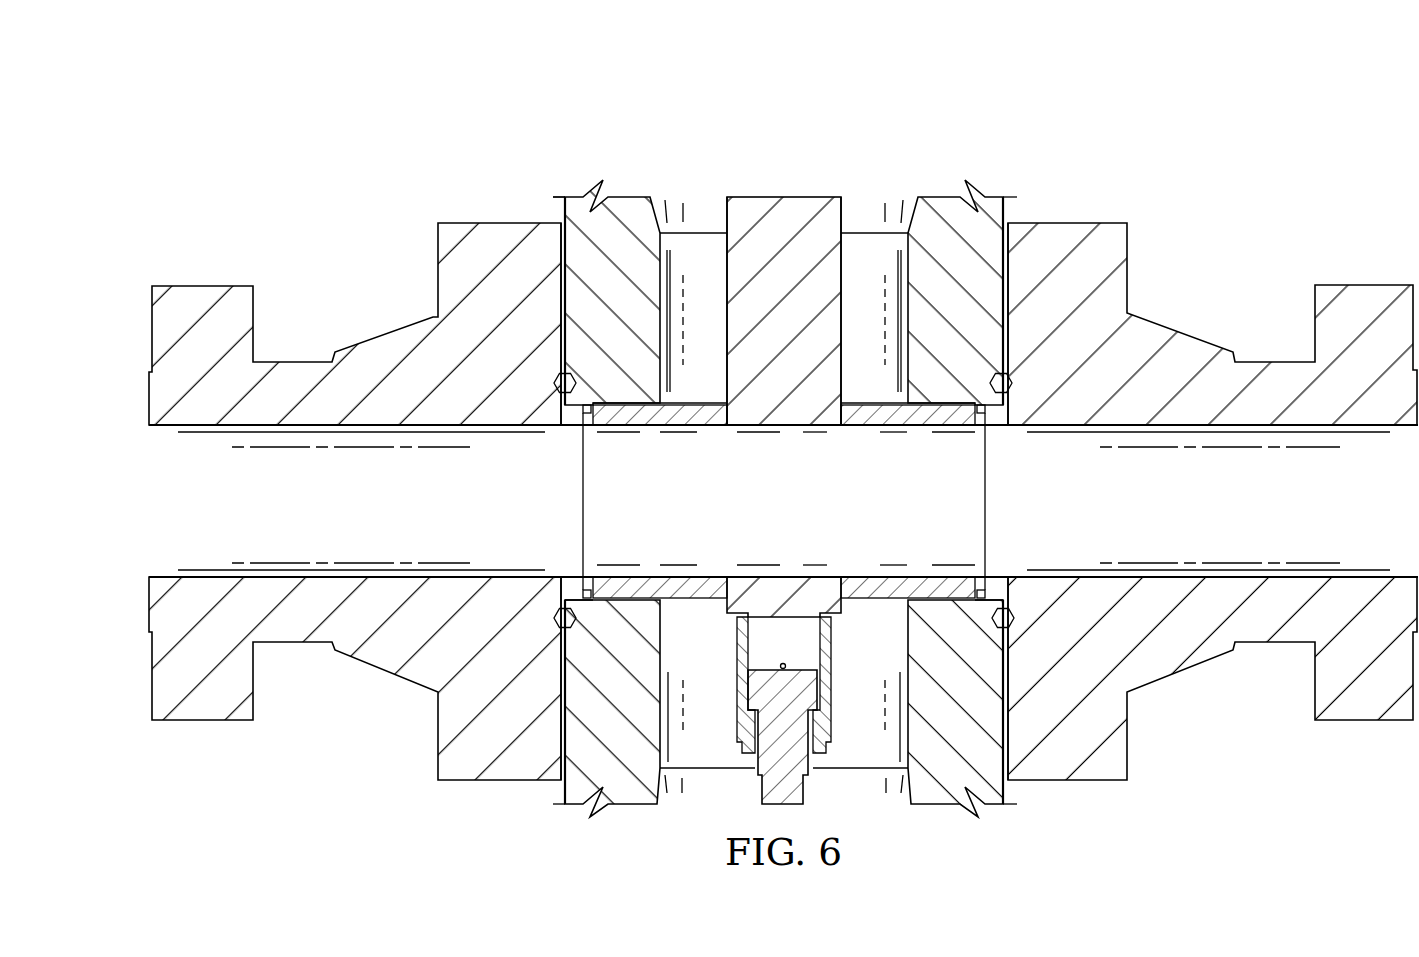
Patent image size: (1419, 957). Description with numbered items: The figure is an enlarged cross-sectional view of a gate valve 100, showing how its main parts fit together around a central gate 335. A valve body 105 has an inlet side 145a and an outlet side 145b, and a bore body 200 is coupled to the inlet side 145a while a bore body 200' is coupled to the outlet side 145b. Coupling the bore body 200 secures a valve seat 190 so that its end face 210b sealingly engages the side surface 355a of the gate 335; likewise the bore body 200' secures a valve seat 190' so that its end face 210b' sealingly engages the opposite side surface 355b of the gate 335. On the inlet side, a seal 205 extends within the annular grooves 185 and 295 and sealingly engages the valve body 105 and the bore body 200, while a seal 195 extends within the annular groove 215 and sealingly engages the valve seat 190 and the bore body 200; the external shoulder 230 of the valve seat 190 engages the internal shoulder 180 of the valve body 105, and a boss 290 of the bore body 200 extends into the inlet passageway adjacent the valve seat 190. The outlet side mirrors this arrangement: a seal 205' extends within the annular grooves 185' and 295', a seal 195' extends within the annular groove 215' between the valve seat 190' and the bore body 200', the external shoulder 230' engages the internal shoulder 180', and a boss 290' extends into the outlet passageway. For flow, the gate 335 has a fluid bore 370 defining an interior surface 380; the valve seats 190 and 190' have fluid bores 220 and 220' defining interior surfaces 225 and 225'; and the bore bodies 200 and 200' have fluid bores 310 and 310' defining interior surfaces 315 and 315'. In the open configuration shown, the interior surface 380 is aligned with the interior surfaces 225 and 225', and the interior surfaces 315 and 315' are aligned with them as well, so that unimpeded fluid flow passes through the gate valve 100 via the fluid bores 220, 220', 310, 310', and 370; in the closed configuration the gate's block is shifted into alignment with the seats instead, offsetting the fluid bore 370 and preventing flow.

The gate valve 100 is at (493, 121).
The valve body 105 is at (948, 773).
The inlet side 145a is at (560, 296).
The outlet side 145b is at (1010, 288).
The internal shoulder 180 is at (660, 442).
The internal shoulder 180' is at (908, 442).
The annular groove 185 is at (590, 642).
The annular groove 185' is at (975, 642).
The valve seat 190 is at (667, 299).
The valve seat 190' is at (912, 299).
The seal 195 is at (536, 437).
The seal 195' is at (1031, 437).
The bore body 200 is at (355, 501).
The bore body 200' is at (1212, 501).
The seal 205 is at (527, 375).
The seal 205' is at (1040, 375).
The end face 210b is at (763, 311).
The end face 210b' is at (805, 311).
The annular groove 215 is at (544, 566).
The annular groove 215' is at (1022, 566).
The fluid bore 220 is at (554, 501).
The fluid bore 220' is at (1026, 501).
The interior surface 225 is at (660, 458).
The interior surface 225' is at (908, 458).
The external shoulder 230 is at (688, 703).
The external shoulder 230' is at (878, 703).
The boss 290 is at (660, 570).
The boss 290' is at (908, 570).
The annular groove 295 is at (520, 626).
The annular groove 295' is at (1050, 626).
The fluid bore 310 is at (361, 501).
The fluid bore 310' is at (1208, 501).
The interior surface 315 is at (356, 396).
The interior surface 315' is at (1210, 396).
The gate 335 is at (782, 456).
The side surface 355a is at (727, 540).
The side surface 355b is at (841, 540).
The fluid bore 370 is at (764, 531).
The interior surface 380 is at (782, 580).